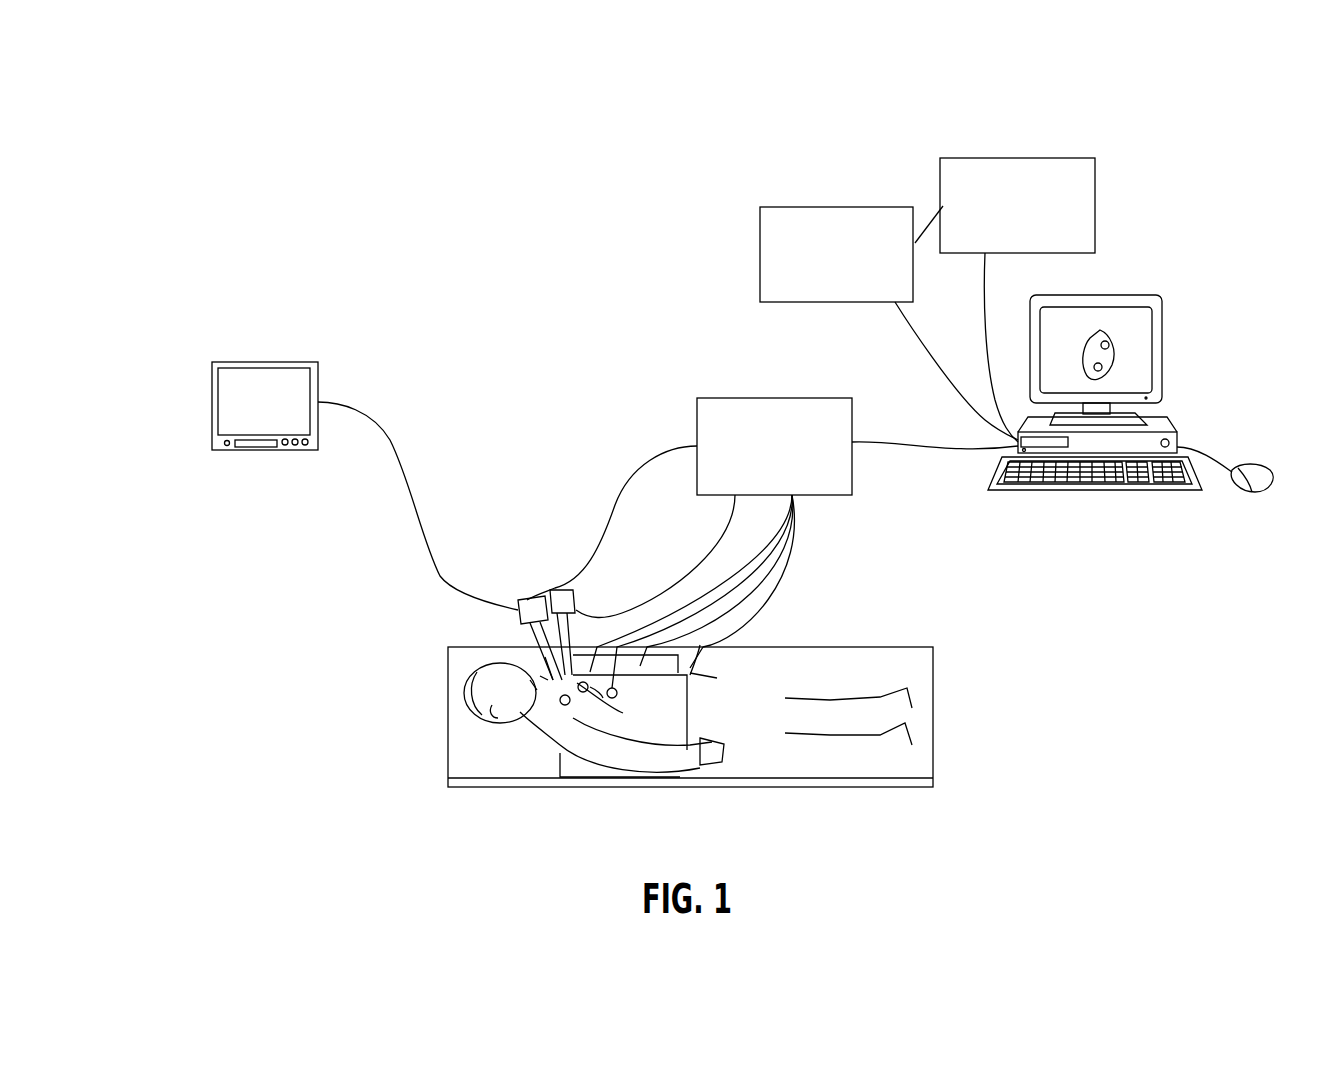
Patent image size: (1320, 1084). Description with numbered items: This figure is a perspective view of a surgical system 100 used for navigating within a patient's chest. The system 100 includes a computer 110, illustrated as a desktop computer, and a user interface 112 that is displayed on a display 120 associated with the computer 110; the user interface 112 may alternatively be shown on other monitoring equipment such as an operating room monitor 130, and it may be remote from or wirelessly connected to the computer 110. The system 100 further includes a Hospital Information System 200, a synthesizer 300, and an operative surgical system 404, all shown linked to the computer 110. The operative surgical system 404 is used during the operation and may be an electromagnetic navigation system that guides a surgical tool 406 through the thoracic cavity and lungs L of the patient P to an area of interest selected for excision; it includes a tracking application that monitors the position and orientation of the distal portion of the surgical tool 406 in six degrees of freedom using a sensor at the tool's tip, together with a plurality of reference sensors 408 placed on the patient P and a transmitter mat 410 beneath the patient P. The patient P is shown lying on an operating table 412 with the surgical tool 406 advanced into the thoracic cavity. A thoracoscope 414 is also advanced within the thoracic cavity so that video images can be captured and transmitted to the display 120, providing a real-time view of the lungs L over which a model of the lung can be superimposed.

The system 100 is at (776, 118).
The computer 110 is at (1134, 368).
The user interface 112 is at (1120, 330).
The display 120 is at (1165, 351).
The operating room monitor 130 is at (210, 407).
The Hospital Information System 200 is at (889, 323).
The synthesizer 300 is at (1017, 300).
The operative surgical system 404 is at (772, 543).
The surgical tool 406 is at (560, 589).
The reference sensors 408 is at (564, 706).
The transmitter mat 410 is at (575, 765).
The operating table 412 is at (780, 789).
The thoracoscope 414 is at (524, 603).
The patient P is at (465, 685).
The lungs L is at (1099, 330).